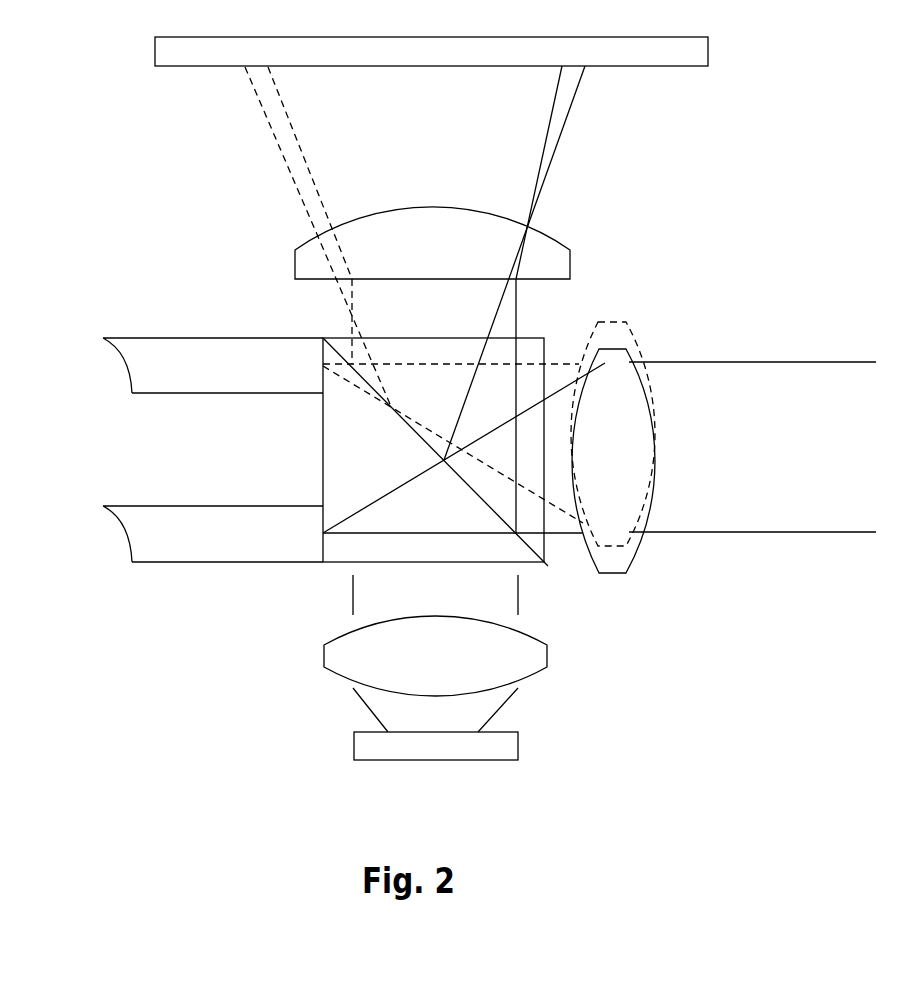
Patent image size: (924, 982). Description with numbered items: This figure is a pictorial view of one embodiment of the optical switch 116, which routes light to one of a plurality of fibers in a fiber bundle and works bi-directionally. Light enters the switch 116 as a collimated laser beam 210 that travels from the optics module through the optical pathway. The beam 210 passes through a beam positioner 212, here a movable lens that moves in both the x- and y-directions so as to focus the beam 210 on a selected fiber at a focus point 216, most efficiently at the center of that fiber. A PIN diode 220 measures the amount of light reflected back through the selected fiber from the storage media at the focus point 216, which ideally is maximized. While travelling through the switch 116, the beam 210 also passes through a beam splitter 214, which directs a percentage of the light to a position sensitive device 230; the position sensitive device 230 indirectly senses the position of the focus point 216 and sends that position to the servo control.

The optical switch 116 is at (820, 188).
The collimated laser beam 210 is at (785, 362).
The beam positioner 212 is at (637, 557).
The beam splitter 214 is at (546, 563).
The focus point 216 is at (336, 562).
The PIN diode 220 is at (518, 745).
The position sensitive device 230 is at (623, 66).